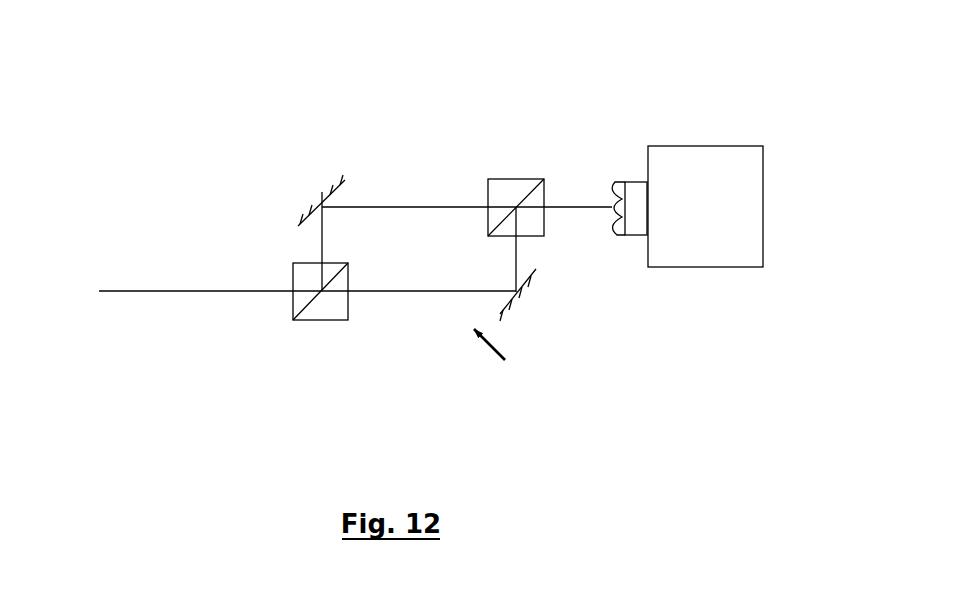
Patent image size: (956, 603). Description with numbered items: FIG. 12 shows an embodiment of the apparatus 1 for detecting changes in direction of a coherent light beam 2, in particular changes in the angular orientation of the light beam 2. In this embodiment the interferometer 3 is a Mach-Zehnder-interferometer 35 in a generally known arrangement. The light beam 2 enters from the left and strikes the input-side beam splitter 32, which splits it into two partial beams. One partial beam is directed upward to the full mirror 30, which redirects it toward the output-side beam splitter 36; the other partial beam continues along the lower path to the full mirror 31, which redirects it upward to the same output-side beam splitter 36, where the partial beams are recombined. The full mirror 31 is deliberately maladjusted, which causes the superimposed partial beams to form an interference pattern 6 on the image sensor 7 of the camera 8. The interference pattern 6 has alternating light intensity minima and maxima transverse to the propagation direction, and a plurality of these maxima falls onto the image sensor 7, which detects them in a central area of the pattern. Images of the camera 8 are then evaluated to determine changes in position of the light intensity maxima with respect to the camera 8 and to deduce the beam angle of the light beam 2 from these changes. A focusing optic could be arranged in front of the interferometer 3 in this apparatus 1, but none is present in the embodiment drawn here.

The apparatus 1 is at (590, 113).
The coherent light beam 2 is at (113, 289).
The interferometer 3 is at (592, 168).
The interference pattern 6 is at (615, 239).
The image sensor 7 is at (635, 236).
The camera 8 is at (685, 268).
The full mirror 30 is at (322, 178).
The full mirror 31 is at (528, 313).
The input-side beam splitter 32 is at (307, 322).
The Mach-Zehnder-interferometer 35 is at (217, 213).
The output-side beam splitter 36 is at (523, 178).